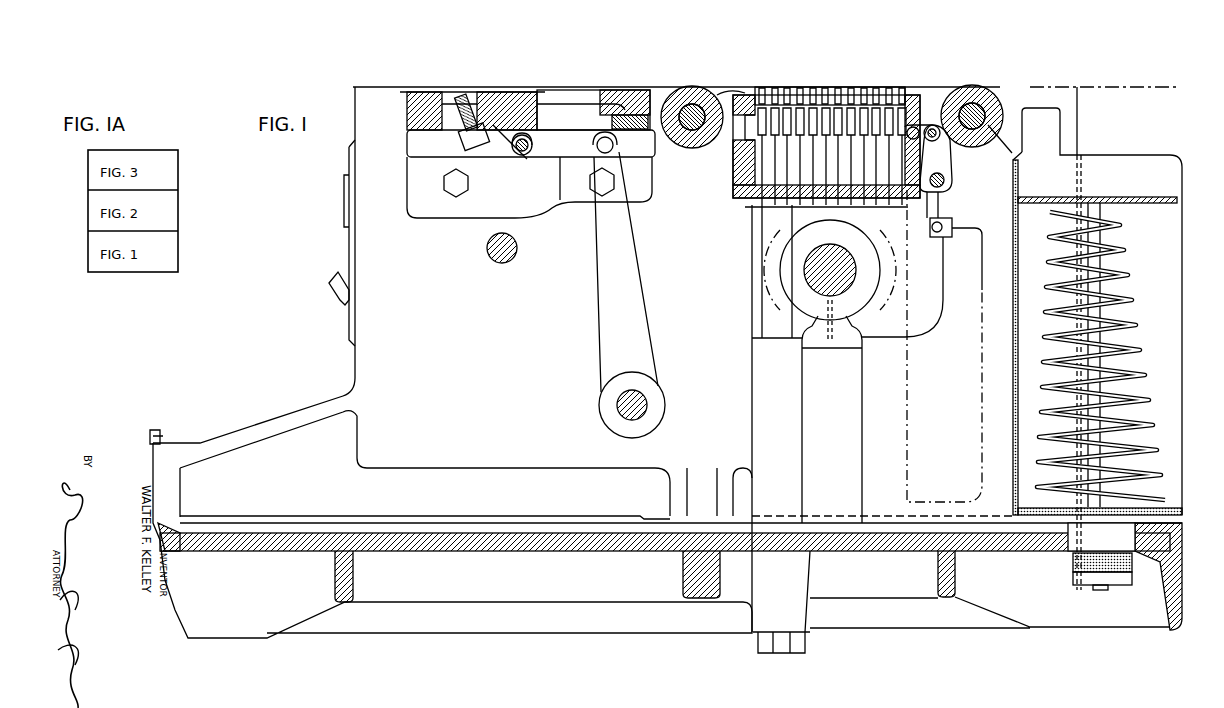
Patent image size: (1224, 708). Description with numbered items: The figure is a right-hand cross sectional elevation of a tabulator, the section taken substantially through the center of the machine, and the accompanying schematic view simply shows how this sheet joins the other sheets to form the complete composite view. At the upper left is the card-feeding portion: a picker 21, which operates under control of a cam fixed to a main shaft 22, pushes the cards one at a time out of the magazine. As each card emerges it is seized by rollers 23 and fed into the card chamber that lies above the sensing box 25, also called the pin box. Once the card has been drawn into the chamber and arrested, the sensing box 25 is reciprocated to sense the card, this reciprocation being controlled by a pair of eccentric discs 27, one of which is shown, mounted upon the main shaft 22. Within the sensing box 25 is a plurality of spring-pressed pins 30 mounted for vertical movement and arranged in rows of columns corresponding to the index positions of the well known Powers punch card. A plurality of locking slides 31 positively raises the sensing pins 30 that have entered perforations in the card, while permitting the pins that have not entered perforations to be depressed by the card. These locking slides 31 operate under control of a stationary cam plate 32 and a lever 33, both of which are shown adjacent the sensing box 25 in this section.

The picker 21 is at (540, 90).
The main shaft 22 is at (800, 298).
The rollers 23 is at (682, 147).
The sensing box 25 is at (792, 151).
The eccentric discs 27 is at (815, 236).
The spring-pressed pins 30 is at (750, 196).
The locking slides 31 is at (747, 135).
The stationary cam plate 32 is at (968, 343).
The lever 33 is at (937, 202).